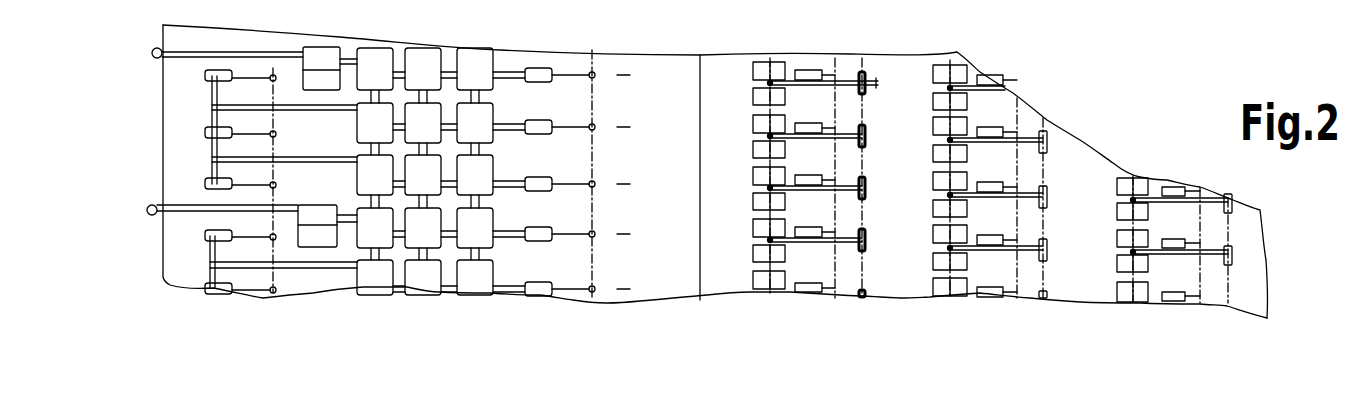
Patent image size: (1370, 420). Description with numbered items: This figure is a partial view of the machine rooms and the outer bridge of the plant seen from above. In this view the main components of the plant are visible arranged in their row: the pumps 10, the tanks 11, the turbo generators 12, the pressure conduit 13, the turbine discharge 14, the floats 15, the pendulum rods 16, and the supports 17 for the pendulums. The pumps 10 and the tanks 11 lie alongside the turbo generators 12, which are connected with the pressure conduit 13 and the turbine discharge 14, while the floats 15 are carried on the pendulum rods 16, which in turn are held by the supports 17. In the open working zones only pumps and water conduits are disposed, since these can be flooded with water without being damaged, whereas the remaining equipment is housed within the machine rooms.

The pump 10 is at (548, 290).
The tank 11 is at (420, 273).
The turbo generator 12 is at (320, 240).
The pressure conduit 13 is at (252, 264).
The turbine discharge 14 is at (155, 63).
The float 15 is at (757, 72).
The pendulum rod 16 is at (968, 249).
The support for the pendulums 17 is at (1047, 251).